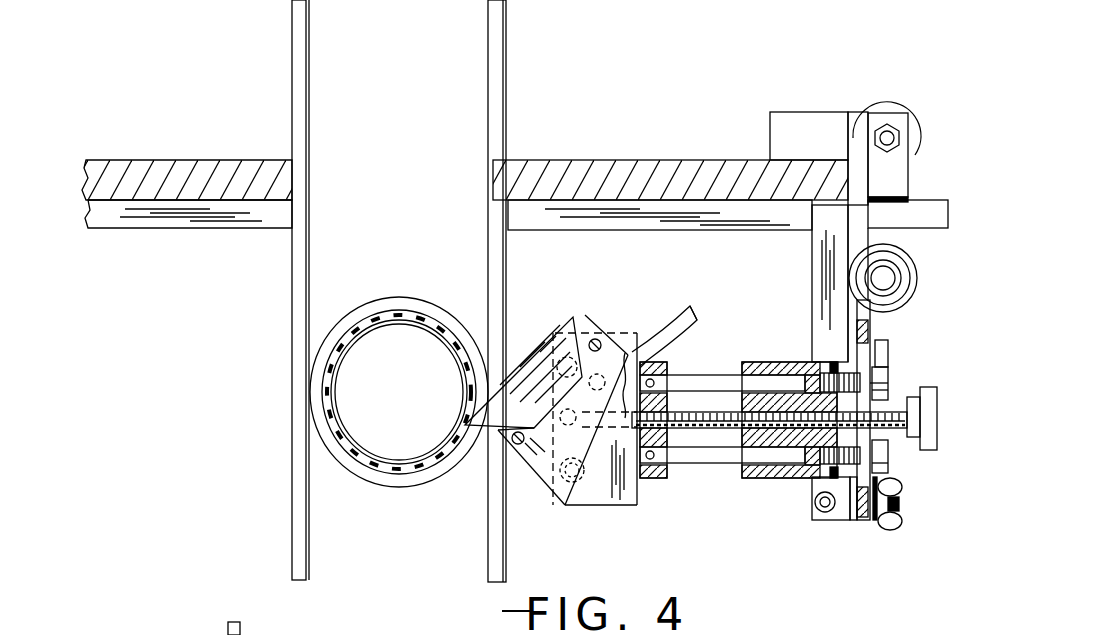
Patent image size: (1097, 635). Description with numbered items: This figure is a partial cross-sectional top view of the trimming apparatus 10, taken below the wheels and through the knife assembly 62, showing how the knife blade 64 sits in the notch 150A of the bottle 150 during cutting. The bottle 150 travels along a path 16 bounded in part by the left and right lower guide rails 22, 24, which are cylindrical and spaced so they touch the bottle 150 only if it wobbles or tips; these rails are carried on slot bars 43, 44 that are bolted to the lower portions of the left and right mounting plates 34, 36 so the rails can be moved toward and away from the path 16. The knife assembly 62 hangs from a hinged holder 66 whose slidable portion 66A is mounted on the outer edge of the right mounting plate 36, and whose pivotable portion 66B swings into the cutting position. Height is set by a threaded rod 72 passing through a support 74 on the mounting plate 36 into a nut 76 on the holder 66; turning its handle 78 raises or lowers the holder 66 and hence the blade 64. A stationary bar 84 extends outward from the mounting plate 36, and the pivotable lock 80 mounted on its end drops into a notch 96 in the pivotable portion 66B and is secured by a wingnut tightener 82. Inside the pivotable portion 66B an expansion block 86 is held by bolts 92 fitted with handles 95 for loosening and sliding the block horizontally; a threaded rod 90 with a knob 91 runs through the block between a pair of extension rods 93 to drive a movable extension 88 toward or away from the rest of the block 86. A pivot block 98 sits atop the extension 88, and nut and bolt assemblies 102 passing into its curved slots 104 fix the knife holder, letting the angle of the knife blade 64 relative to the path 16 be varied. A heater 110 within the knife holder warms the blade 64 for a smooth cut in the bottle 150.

The trimming apparatus 10 is at (660, 58).
The path 16 is at (383, 186).
The left lower guide rail 22 is at (294, 78).
The right lower guide rail 24 is at (508, 44).
The left mounting plate 34 is at (165, 176).
The right mounting plate 36 is at (542, 178).
The slot bar 43 is at (125, 212).
The slot bar 44 is at (920, 207).
The knife assembly 62 is at (678, 541).
The knife blade 64 is at (550, 320).
The hinged holder 66 is at (862, 235).
The slidable portion 66A is at (857, 117).
The pivotable portion 66B is at (862, 507).
The threaded rod 72 is at (880, 127).
The support 74 is at (778, 112).
The nut 76 is at (893, 108).
The handle 78 is at (876, 113).
The pivotable lock 80 is at (838, 520).
The wingnut tightener 82 is at (896, 522).
The stationary bar 84 is at (823, 247).
The expansion block 86 is at (803, 362).
The movable extension 88 is at (650, 480).
The threaded rod 90 is at (893, 430).
The knob 91 is at (937, 435).
The bolts 92 is at (870, 380).
The extension rods 93 is at (697, 380).
The handles 95 is at (888, 383).
The notch 96 is at (850, 520).
The pivot block 98 is at (610, 493).
The nut and bolt assemblies 102 is at (612, 325).
The curved slots 104 is at (580, 500).
The heater 110 is at (650, 318).
The bottle 150 is at (360, 298).
The notch 150A is at (372, 462).